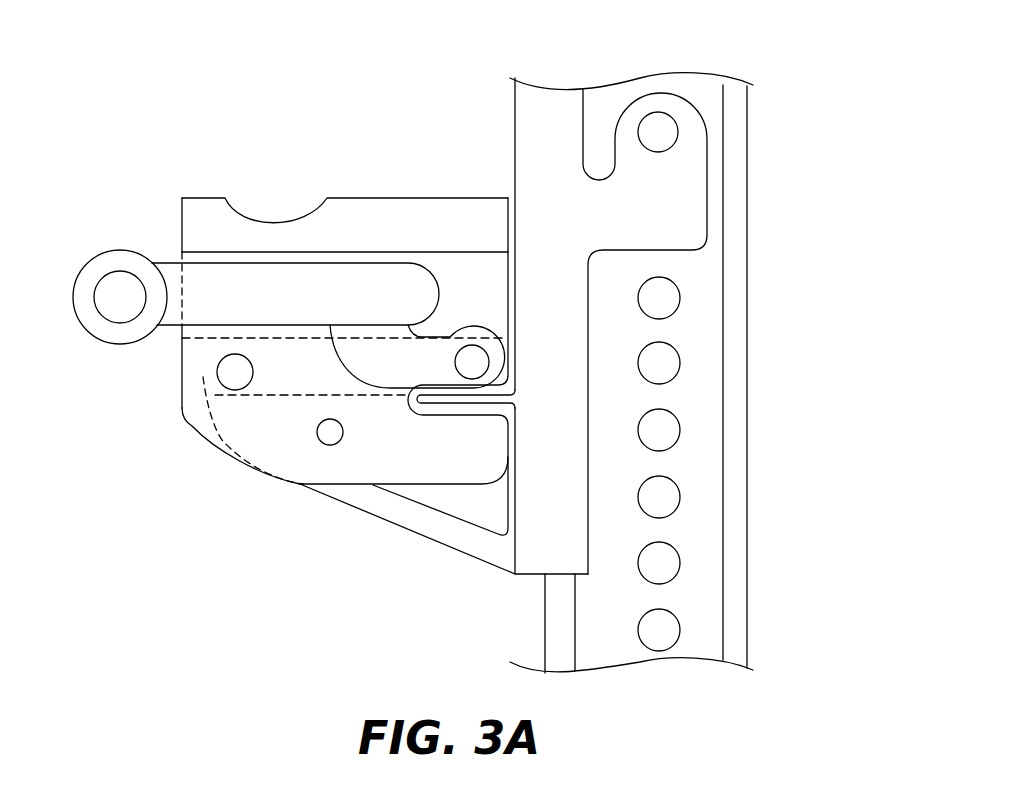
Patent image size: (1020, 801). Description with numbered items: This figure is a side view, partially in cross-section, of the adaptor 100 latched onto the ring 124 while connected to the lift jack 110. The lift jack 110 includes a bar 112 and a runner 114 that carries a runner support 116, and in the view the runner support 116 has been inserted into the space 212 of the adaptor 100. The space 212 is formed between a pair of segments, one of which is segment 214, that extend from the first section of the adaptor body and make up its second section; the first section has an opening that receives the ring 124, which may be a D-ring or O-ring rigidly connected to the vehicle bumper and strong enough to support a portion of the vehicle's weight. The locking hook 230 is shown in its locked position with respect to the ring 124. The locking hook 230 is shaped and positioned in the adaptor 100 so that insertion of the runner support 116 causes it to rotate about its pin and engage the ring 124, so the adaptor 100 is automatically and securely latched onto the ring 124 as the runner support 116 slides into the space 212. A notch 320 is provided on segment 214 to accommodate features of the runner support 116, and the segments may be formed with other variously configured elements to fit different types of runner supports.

The adaptor 100 is at (150, 205).
The lift jack 110 is at (692, 62).
The bar 112 is at (747, 588).
The runner 114 is at (698, 172).
The runner support 116 is at (380, 517).
The ring 124 is at (145, 340).
The space 212 is at (210, 430).
The segment 214 is at (232, 462).
The locking hook 230 is at (463, 328).
The notch 320 is at (453, 416).